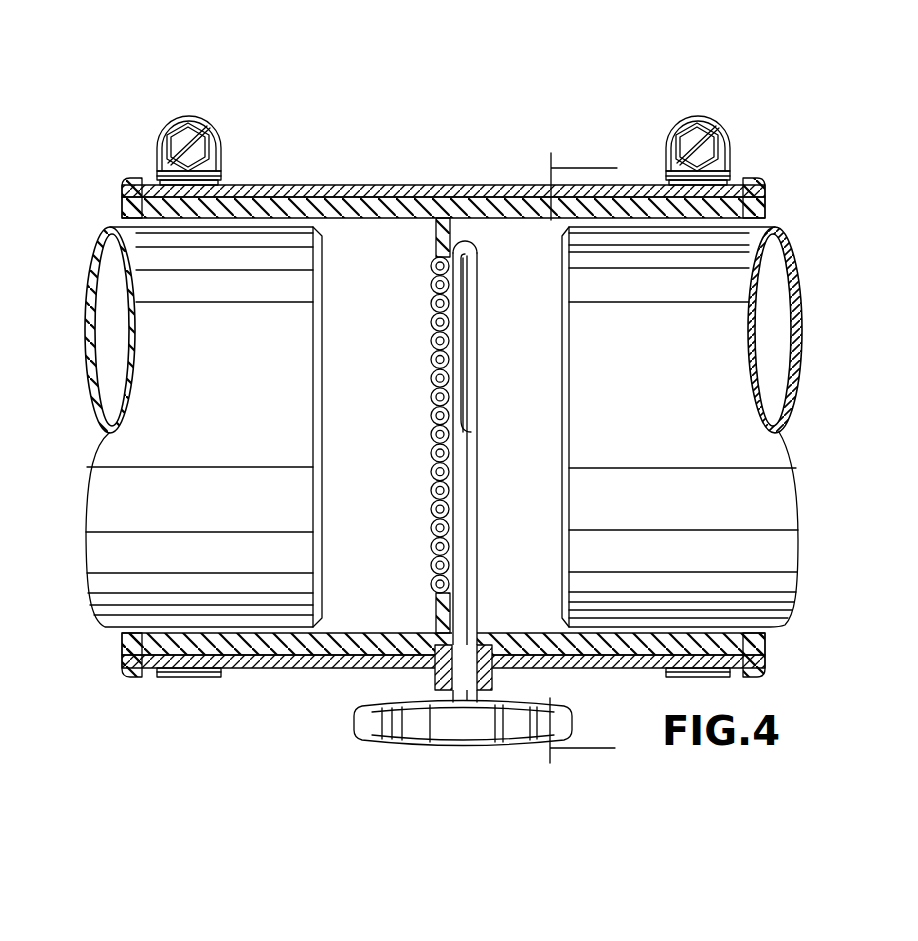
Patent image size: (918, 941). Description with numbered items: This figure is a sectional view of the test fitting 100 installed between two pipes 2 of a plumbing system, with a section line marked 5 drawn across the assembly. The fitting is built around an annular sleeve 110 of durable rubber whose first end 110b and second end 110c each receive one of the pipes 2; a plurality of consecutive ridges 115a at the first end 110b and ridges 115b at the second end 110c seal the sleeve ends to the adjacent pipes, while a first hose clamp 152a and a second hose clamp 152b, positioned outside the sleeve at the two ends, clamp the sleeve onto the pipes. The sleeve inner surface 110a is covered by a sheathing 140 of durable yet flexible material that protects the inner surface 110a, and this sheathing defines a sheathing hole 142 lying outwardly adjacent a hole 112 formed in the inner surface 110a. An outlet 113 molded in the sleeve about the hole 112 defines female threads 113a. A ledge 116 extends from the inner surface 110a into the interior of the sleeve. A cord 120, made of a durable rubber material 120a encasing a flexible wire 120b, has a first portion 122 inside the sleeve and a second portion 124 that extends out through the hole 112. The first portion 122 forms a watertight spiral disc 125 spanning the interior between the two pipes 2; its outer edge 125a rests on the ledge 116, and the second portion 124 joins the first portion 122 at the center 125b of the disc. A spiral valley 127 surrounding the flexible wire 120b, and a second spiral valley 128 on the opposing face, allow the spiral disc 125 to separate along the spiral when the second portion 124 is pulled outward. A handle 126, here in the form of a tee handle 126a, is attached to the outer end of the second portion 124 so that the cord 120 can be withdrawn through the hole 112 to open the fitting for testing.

The pipe 2 is at (86, 496).
The section line 5- 5 is at (583, 469).
The test fitting 100 is at (281, 888).
The annular sleeve 110 is at (266, 192).
The inner surface 110a is at (337, 636).
The first end 110b is at (120, 196).
The second end 110c is at (768, 196).
The hole 112 is at (484, 635).
The outlet 113 is at (420, 680).
The female threads 113a is at (432, 684).
The consecutive ridges 115a is at (128, 643).
The consecutive ridges 115b is at (633, 194).
The ledge 116 is at (490, 183).
The cord 120 is at (491, 388).
The durable rubber material 120a is at (437, 262).
The flexible wire 120b is at (436, 278).
The first portion 122 is at (422, 315).
The second portion 124 is at (490, 482).
The spiral disc 125 is at (422, 348).
The outer edge 125a is at (432, 258).
The center 125b is at (422, 425).
The handle 126 is at (426, 757).
The tee handle 126a is at (455, 745).
The spiral valley 127 is at (434, 462).
The second spiral valley 128 is at (434, 482).
The sheathing 140 is at (264, 680).
The sheathing hole 142 is at (510, 660).
The first hose clamp 152a is at (179, 100).
The second hose clamp 152b is at (737, 104).